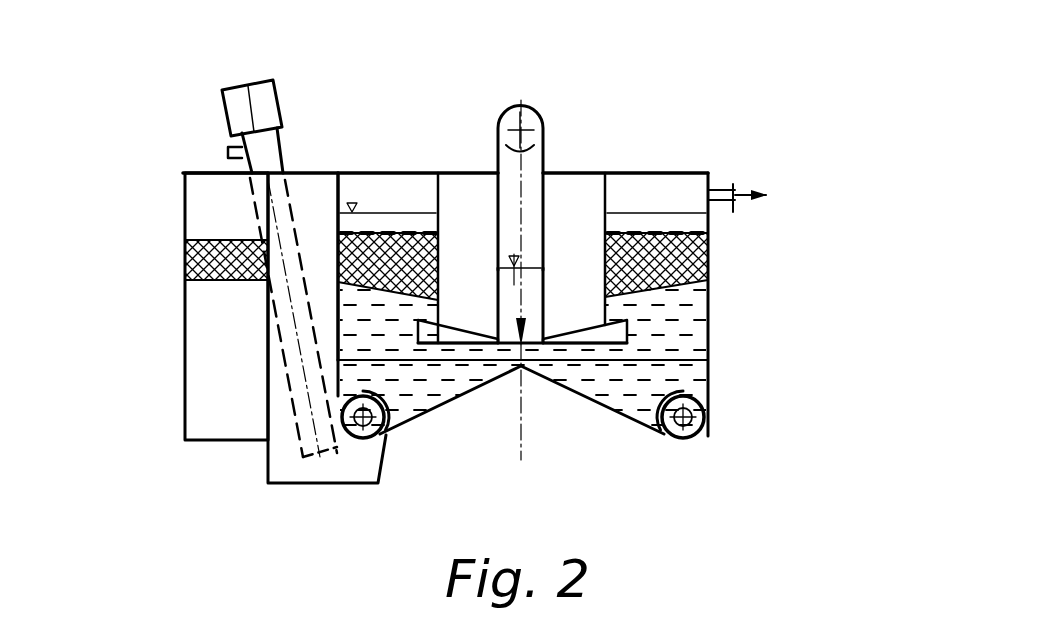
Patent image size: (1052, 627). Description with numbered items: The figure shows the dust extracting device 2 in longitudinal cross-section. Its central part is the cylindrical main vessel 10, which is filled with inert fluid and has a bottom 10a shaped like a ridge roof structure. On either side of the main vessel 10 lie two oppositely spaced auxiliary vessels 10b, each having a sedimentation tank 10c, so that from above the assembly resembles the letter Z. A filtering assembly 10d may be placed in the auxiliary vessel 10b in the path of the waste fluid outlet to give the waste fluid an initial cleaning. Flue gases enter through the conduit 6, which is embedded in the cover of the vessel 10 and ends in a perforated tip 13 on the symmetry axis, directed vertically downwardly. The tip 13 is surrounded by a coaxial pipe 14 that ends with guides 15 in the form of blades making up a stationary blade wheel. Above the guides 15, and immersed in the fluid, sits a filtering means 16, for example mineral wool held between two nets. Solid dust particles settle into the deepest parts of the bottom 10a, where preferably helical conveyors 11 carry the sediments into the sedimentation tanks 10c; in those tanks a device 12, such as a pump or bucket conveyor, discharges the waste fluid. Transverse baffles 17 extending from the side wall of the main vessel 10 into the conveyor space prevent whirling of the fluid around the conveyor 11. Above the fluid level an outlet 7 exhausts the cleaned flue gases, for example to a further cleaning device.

The dust extracting device 2 is at (790, 272).
The conduit 6 is at (525, 123).
The outlet 7 is at (730, 190).
The main vessel 10 is at (620, 187).
The bottom 10a is at (597, 403).
The auxiliary vessel 10b is at (182, 322).
The sedimentation tank 10c is at (287, 465).
The filtering assembly 10d is at (216, 243).
The conveyor 11 is at (692, 424).
The device for discharging waste fluid 12 is at (252, 143).
The perforated tip 13 is at (533, 305).
The coaxial pipe 14 is at (437, 190).
The guides 15 is at (617, 333).
The filtering means 16 is at (697, 267).
The transverse baffles 17 is at (660, 358).